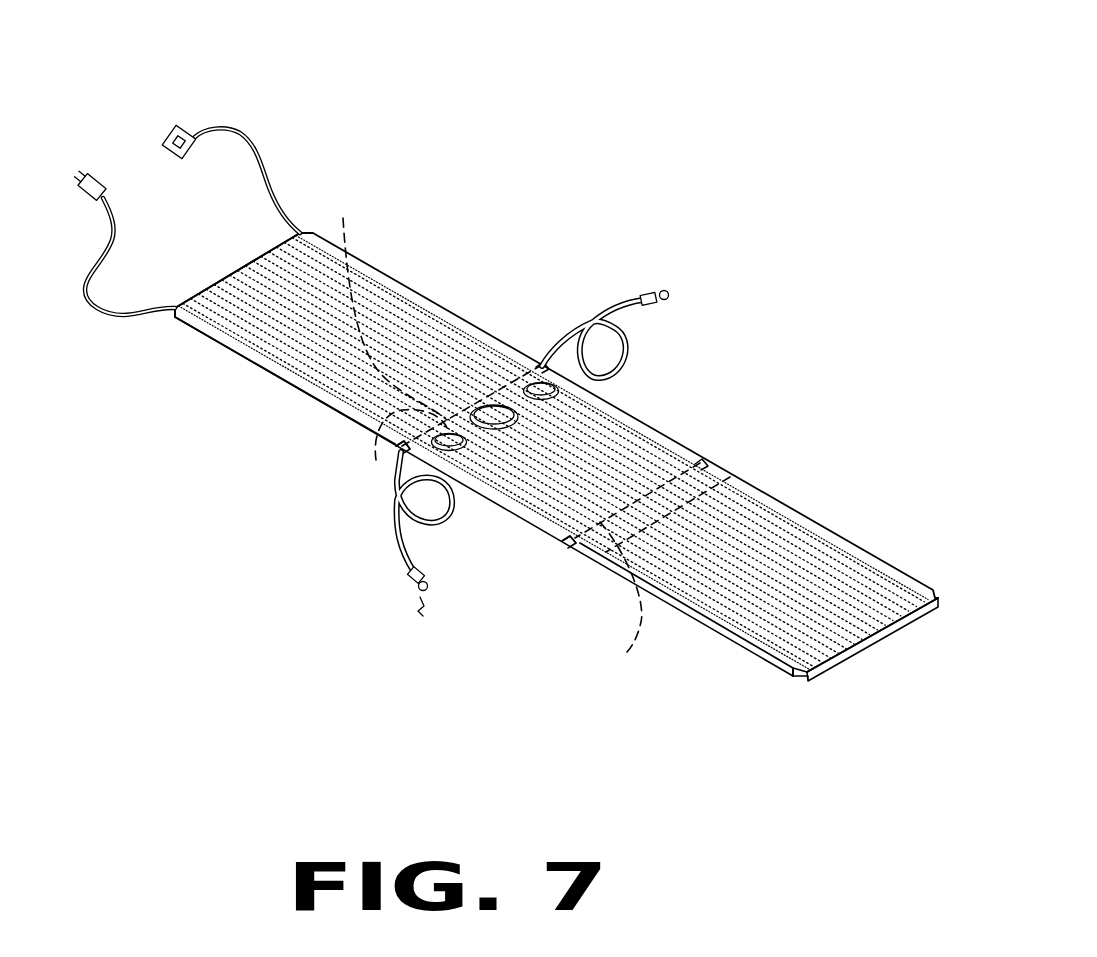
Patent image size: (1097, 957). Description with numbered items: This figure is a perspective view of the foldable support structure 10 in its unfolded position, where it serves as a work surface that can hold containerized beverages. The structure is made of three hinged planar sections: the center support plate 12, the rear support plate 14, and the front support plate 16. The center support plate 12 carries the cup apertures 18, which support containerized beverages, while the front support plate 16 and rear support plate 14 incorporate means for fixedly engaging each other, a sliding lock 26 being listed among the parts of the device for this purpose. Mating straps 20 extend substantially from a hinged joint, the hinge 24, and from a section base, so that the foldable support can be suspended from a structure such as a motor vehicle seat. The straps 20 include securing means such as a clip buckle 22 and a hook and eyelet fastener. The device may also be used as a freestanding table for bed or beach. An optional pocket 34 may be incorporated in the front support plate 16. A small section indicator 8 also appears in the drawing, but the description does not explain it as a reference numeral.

The mat assembly 10 is at (667, 109).
The mat body 12 is at (643, 433).
The first side edge 14 is at (237, 358).
The second side edge 16 is at (740, 648).
The apertures 18 is at (453, 440).
The tether cords 20 is at (238, 127).
The electrical plug 22 is at (163, 147).
The slot 24 is at (593, 523).
The tie-down notches 26 is at (396, 450).
The fold lines 34 is at (484, 437).
The section line 8 is at (397, 453).